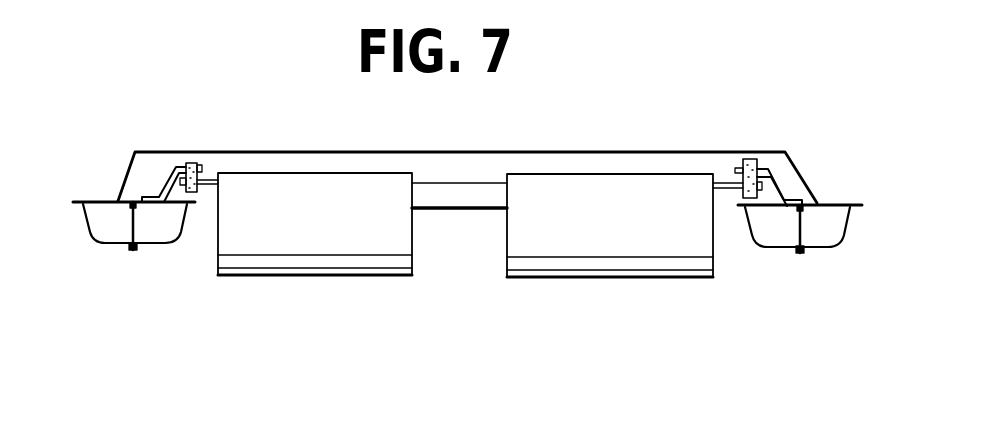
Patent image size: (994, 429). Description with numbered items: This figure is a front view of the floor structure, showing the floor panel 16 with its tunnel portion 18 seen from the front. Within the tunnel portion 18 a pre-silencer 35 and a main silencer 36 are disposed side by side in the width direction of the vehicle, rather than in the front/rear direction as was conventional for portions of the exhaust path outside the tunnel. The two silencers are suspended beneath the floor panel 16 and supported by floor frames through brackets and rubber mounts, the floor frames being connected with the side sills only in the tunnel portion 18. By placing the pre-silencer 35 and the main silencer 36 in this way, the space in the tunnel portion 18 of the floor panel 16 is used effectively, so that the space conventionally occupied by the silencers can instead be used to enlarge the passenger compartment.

The floor panel 16 is at (425, 152).
The tunnel portion 18 is at (467, 157).
The pre-silencer 35 is at (338, 278).
The main silencer 36 is at (615, 278).